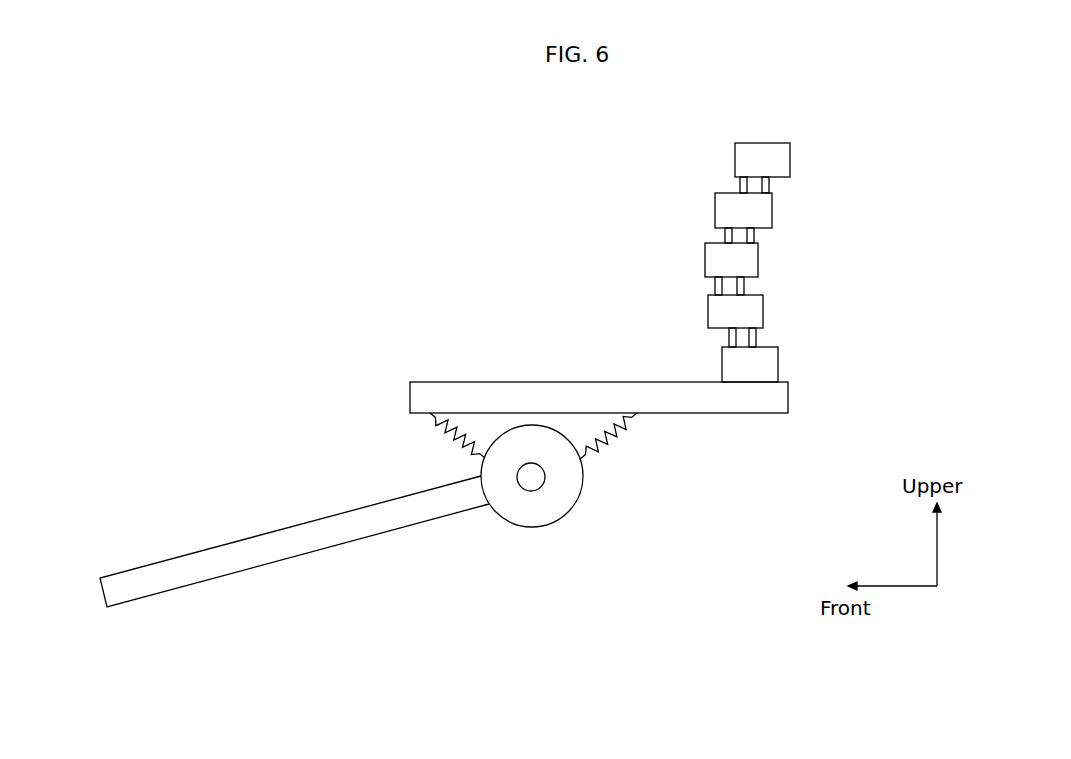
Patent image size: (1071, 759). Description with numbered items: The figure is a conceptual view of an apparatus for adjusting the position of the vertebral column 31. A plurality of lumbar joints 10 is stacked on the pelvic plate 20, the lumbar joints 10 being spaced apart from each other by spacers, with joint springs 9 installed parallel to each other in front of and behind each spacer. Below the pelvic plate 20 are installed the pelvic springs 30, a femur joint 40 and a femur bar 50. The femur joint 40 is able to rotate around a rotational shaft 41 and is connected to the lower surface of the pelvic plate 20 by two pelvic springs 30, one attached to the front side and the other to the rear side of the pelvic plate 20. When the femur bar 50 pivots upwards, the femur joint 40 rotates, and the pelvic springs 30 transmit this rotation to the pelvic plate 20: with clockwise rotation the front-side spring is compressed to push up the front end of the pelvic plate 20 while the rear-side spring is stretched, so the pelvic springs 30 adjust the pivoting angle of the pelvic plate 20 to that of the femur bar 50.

The joint spring 9 is at (728, 342).
The lumbar joint 10 is at (758, 257).
The pelvic plate 20 is at (473, 392).
The pelvic spring 30 is at (430, 427).
The apparatus for adjusting the position of the vertebral column 31 is at (767, 258).
The femur joint 40 is at (567, 488).
The rotational shaft 41 is at (533, 478).
The femur bar 50 is at (280, 547).